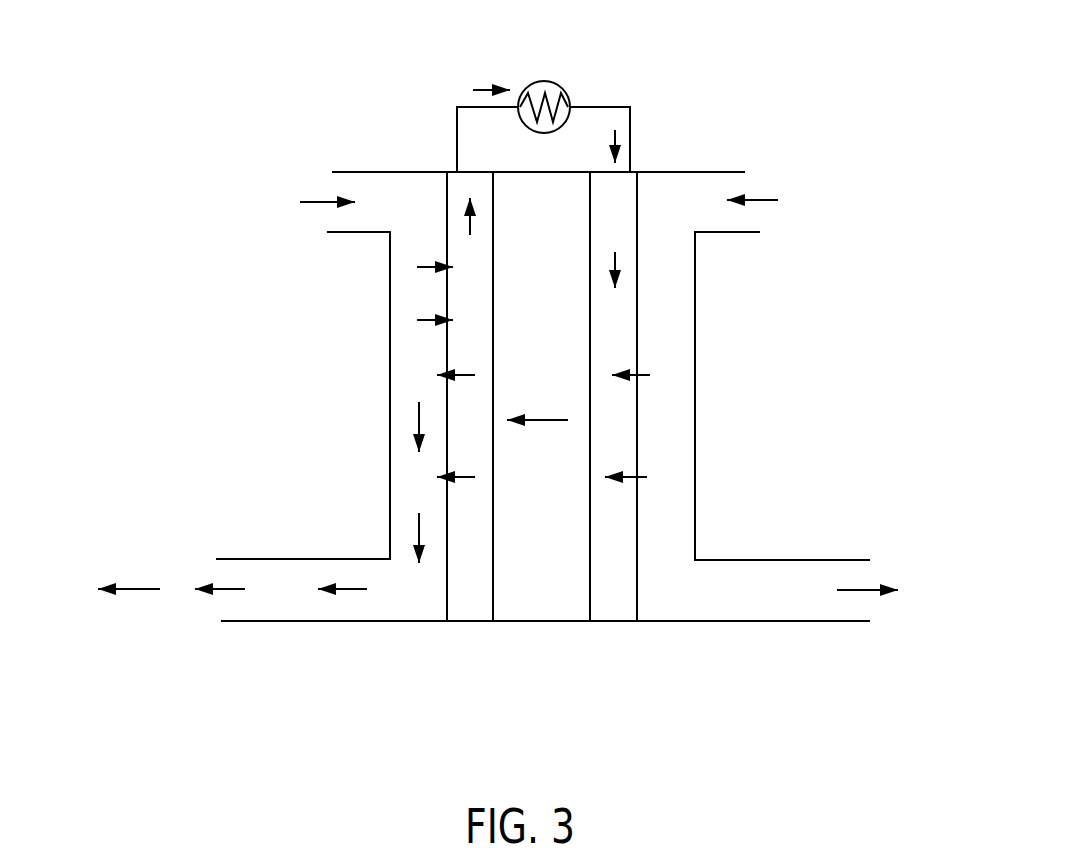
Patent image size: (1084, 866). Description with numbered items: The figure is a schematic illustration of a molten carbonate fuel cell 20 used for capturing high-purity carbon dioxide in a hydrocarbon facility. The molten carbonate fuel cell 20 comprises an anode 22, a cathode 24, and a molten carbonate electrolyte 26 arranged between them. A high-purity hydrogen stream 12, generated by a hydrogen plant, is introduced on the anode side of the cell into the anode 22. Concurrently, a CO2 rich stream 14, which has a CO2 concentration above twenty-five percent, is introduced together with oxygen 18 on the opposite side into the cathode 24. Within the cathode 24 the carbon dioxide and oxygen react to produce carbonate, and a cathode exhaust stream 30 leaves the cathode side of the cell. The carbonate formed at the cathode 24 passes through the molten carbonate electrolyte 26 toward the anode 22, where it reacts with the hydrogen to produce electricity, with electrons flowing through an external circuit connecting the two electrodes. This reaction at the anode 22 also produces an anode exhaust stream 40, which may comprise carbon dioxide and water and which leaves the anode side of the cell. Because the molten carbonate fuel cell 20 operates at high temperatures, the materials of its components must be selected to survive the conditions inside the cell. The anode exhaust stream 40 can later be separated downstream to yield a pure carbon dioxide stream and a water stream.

The molten carbonate fuel cell 20 is at (333, 97).
The high-purity hydrogen stream 12 is at (312, 199).
The CO2 rich stream 14 is at (737, 348).
The oxygen 18 is at (762, 199).
The anode 22 is at (462, 608).
The cathode 24 is at (605, 605).
The molten carbonate electrolyte 26 is at (533, 606).
The cathode exhaust stream 30 is at (866, 590).
The anode exhaust stream 40 is at (145, 589).